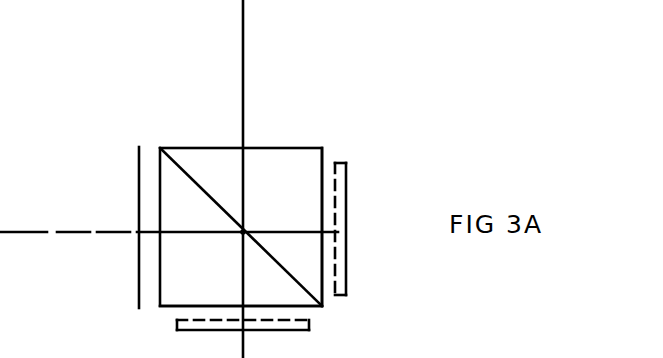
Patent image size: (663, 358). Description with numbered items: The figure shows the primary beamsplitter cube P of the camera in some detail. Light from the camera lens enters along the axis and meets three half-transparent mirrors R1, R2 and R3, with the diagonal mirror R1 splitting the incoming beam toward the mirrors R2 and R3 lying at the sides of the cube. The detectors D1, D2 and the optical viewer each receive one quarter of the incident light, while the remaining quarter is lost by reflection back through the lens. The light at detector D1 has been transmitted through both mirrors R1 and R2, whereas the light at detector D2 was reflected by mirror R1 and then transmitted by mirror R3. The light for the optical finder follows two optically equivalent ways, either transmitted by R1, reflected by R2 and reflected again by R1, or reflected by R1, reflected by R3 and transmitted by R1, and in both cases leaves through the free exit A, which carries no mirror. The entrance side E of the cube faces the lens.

The free exit A is at (241, 215).
The beamsplitter cube P is at (257, 217).
The edge line E is at (125, 227).
The half-transparent mirror R1 is at (241, 227).
The half-transparent mirror R2 is at (309, 227).
The half-transparent mirror R3 is at (241, 295).
The image sensor D1 is at (362, 229).
The image sensor D2 is at (243, 339).